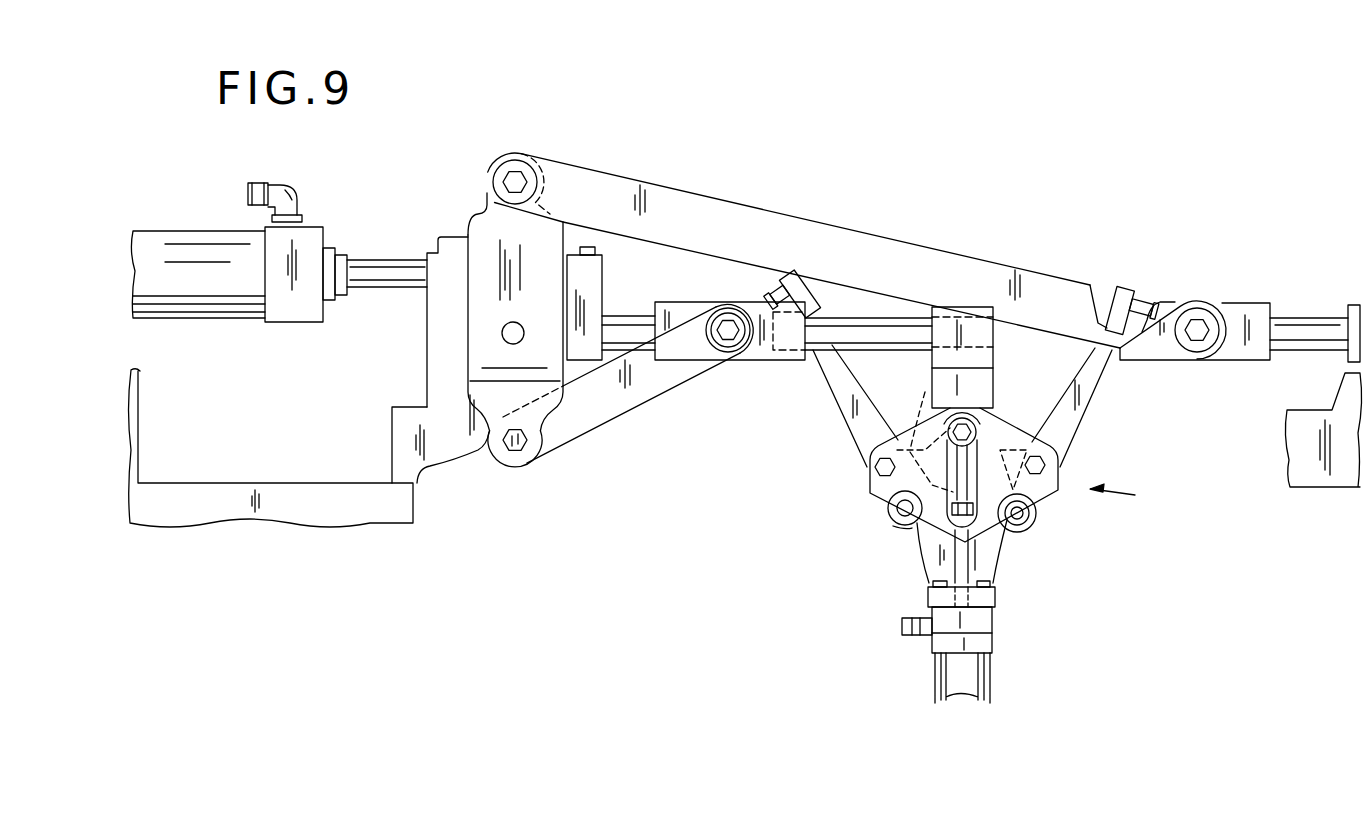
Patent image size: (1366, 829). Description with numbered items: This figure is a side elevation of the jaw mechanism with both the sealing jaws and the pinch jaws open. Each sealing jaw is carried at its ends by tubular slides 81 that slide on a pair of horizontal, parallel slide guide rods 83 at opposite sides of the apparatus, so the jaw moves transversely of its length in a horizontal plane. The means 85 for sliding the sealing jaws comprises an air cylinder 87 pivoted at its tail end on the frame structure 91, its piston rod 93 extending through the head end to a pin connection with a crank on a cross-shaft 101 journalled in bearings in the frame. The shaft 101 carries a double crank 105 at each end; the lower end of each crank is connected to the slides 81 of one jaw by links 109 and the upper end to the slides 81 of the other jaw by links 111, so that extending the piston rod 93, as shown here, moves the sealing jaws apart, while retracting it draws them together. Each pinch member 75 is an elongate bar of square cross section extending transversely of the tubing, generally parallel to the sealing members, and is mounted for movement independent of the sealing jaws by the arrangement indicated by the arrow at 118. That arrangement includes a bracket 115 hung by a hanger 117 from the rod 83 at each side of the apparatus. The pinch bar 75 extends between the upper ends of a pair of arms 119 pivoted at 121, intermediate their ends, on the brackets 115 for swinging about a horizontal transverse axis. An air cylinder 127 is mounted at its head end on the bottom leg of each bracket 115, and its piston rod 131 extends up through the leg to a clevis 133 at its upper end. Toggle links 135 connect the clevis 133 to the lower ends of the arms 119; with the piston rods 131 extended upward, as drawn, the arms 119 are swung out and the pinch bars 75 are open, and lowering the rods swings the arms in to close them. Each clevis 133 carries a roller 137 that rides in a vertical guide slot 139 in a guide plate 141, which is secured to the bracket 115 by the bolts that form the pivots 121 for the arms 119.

The pinch bar 75 is at (808, 293).
The tubular slide 81 is at (748, 366).
The slide guide rod 83 is at (627, 322).
The means for sliding the sealing jaws 85 is at (200, 322).
The air cylinder 87 is at (250, 322).
The frame structure 91 is at (312, 486).
The piston rod 93 is at (387, 288).
The cross-shaft 101 is at (504, 340).
The double crank 105 is at (482, 220).
The link 109 is at (608, 412).
The link 111 is at (718, 212).
The bracket 115 is at (1000, 554).
The hanger 117 is at (980, 387).
The linkage assembly 118 is at (1135, 495).
The arm 119 is at (840, 410).
The pivot 121 is at (872, 467).
The air cylinder 127 is at (965, 675).
The piston rod 131 is at (955, 565).
The clevis 133 is at (888, 512).
The toggle link 135 is at (925, 398).
The roller 137 is at (978, 424).
The guide slot 139 is at (945, 478).
The guide plate 141 is at (930, 520).